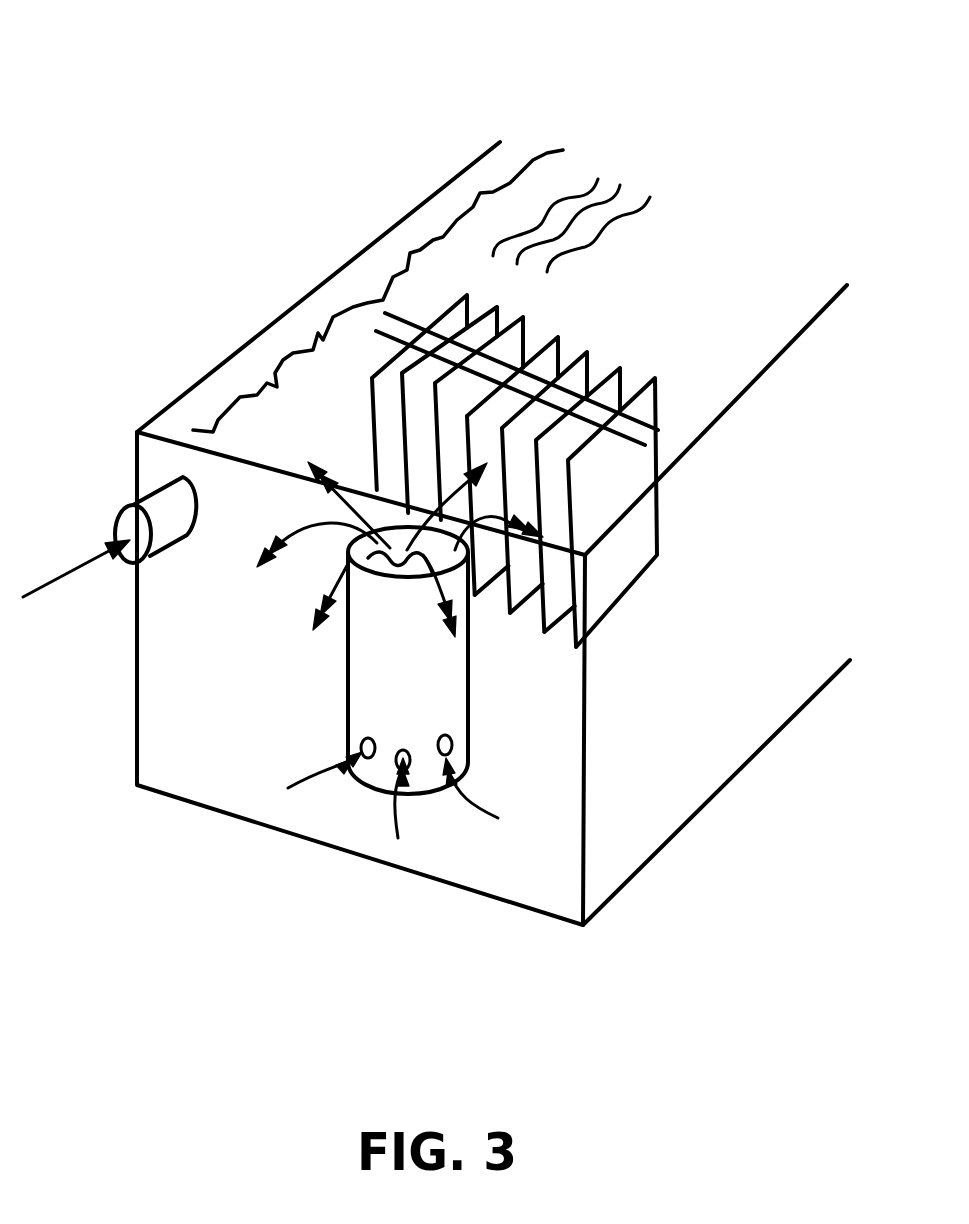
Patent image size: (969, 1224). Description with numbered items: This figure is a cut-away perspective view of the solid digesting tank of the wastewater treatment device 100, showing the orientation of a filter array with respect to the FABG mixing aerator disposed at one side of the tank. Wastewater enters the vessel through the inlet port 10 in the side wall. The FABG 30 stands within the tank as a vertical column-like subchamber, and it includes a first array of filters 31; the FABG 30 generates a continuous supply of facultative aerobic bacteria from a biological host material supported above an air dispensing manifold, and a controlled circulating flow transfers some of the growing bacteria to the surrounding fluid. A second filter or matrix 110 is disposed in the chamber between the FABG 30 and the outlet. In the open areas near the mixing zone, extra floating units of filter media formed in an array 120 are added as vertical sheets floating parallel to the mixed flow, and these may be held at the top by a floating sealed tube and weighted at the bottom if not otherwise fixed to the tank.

The wastewater treatment device 100 is at (480, 87).
The second filter or matrix 110 is at (332, 268).
The filter array 120 is at (678, 508).
The inlet port 10 is at (160, 510).
The FABG 30 is at (338, 723).
The first array of filters 31 is at (400, 549).